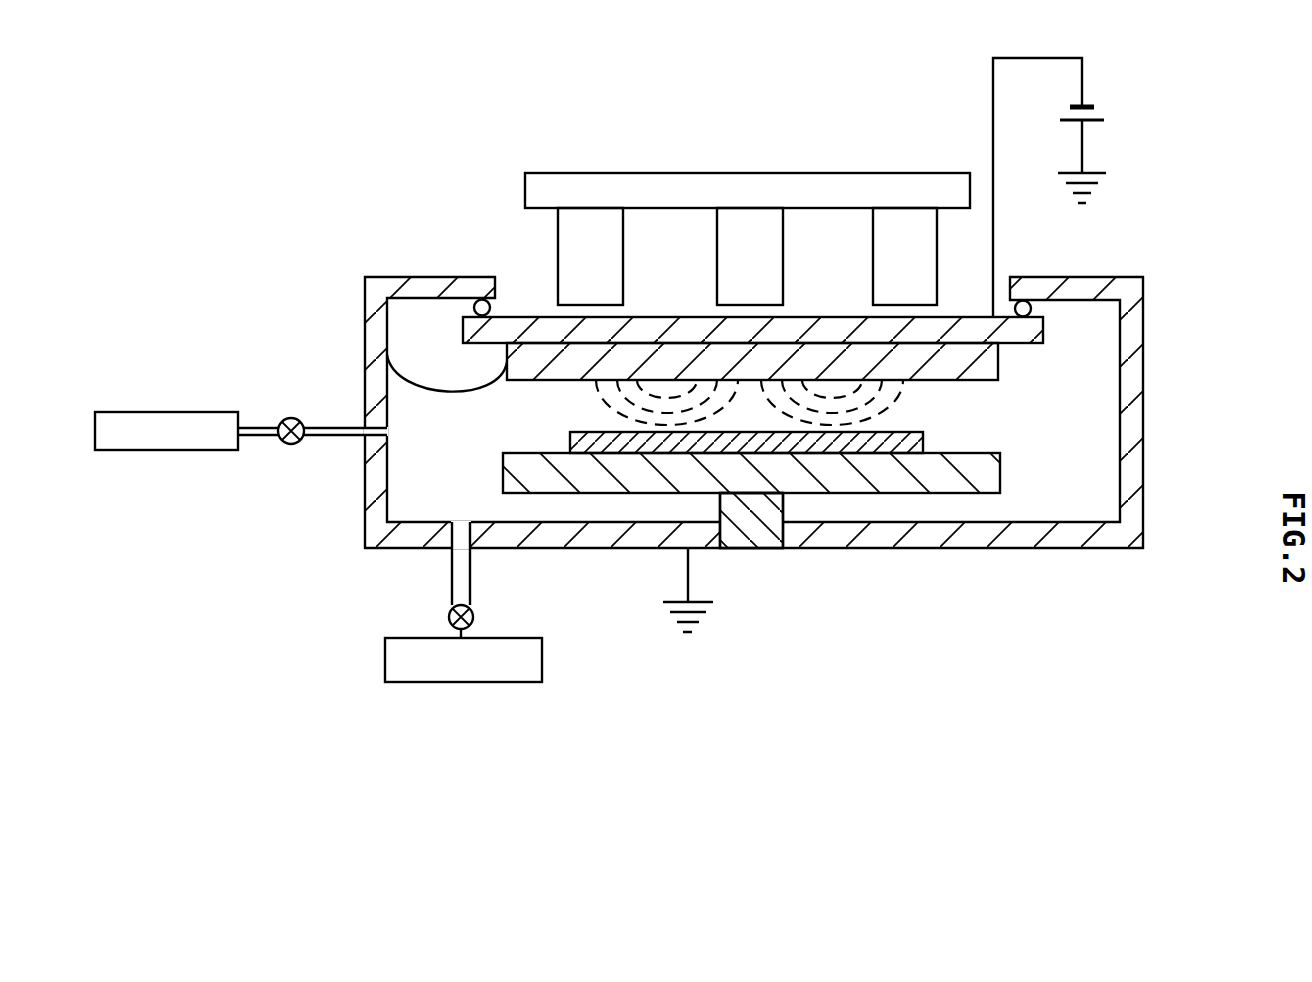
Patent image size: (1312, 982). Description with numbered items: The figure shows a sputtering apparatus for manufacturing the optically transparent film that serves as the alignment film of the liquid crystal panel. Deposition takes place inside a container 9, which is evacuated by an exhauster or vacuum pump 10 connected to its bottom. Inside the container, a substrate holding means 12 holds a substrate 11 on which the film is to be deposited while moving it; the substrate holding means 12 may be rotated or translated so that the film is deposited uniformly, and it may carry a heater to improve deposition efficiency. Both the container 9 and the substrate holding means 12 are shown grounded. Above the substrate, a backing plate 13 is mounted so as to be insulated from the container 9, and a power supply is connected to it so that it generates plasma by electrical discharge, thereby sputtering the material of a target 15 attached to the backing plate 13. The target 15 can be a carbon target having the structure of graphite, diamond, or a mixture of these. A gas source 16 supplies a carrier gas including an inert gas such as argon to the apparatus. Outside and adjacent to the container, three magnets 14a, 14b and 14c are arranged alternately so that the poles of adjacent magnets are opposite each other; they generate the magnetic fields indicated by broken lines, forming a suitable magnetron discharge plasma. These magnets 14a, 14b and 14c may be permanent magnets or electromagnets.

The container 9 is at (1143, 398).
The vacuum pump 10 is at (524, 682).
The substrate 11 is at (923, 447).
The substrate holding means 12 is at (1000, 462).
The backing plate 13 is at (1043, 336).
The magnet 14a is at (558, 240).
The magnet 14b is at (718, 255).
The magnet 14c is at (875, 260).
The target 15 is at (387, 355).
The gas source 16 is at (183, 412).